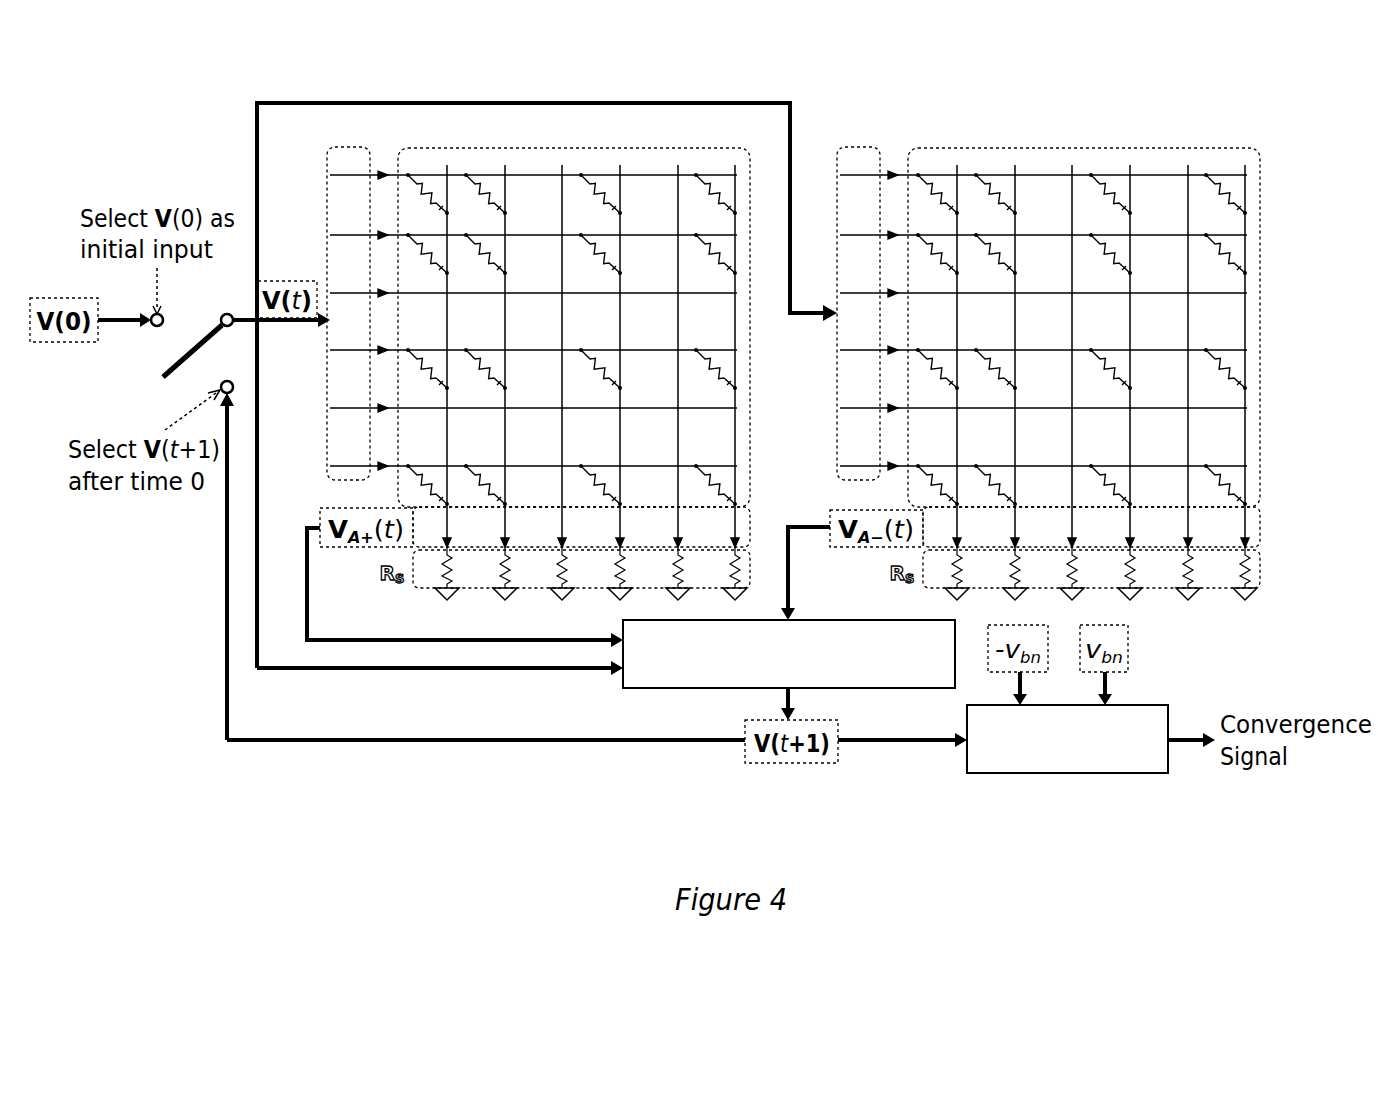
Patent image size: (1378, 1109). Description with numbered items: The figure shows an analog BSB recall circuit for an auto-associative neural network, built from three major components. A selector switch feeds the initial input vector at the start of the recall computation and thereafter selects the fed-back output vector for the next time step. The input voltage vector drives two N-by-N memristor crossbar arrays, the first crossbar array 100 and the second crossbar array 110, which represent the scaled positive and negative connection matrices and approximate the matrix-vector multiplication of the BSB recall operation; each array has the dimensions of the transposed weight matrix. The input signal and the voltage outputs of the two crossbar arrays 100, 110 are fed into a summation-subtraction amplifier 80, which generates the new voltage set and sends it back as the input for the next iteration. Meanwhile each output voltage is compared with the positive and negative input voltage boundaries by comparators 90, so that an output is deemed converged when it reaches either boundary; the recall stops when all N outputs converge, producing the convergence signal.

The summation-subtraction amplifier 80 is at (635, 688).
The comparator 90 is at (1008, 773).
The memristor crossbar array M3 100 is at (750, 422).
The memristor crossbar array M4 110 is at (1260, 313).